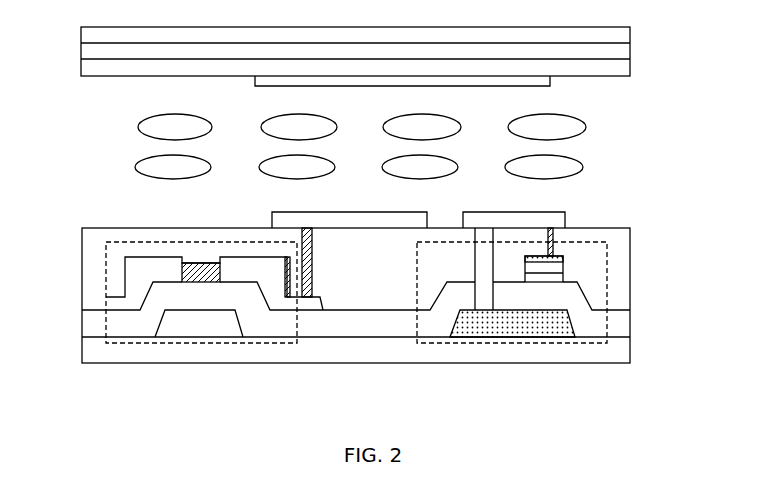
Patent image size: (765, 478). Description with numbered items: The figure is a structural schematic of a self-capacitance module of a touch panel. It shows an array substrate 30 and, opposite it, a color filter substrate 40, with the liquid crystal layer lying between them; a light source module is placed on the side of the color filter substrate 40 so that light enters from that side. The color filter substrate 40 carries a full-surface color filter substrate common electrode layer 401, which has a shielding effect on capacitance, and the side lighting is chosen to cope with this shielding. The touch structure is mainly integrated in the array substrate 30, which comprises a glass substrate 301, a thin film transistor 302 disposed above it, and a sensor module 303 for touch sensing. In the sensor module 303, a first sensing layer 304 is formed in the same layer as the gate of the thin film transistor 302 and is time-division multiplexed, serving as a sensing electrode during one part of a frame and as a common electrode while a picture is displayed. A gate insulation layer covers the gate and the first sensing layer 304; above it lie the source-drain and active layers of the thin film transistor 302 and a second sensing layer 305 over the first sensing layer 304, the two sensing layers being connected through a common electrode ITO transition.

The color filter substrate 40 is at (655, 27).
The color filter substrate common electrode layer 401 is at (553, 80).
The array substrate 30 is at (668, 228).
The glass substrate 301 is at (82, 347).
The thin film transistor 302 is at (268, 272).
The sensor module 303 is at (590, 278).
The first sensing layer 304 is at (481, 318).
The second sensing layer 305 is at (545, 268).